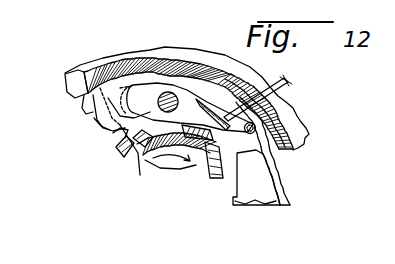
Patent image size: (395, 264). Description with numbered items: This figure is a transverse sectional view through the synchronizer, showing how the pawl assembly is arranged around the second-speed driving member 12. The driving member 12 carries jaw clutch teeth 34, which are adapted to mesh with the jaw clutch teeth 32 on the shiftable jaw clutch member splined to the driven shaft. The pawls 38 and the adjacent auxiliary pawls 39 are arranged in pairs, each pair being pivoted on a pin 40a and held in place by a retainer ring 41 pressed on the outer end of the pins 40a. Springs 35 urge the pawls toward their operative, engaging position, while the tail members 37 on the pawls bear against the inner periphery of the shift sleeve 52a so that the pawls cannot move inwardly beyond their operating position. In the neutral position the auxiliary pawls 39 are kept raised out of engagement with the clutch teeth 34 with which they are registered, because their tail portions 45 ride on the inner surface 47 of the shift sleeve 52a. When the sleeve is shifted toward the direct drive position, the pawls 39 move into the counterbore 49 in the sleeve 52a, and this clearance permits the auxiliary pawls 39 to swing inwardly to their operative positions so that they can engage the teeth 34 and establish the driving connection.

The second-speed driving member 12 is at (138, 153).
The jaw clutch teeth 32 is at (235, 205).
The jaw clutch teeth 34 is at (120, 152).
The springs 35 is at (289, 85).
The tail members 37 is at (113, 133).
The pawls 38 is at (176, 162).
The auxiliary pawls 39 is at (207, 170).
The pin 40a is at (170, 96).
The retainer ring 41 is at (290, 193).
The tail portions 45 is at (143, 82).
The inner surface 47 is at (83, 113).
The counterbore 49 is at (97, 124).
The shift sleeve 52a is at (70, 82).